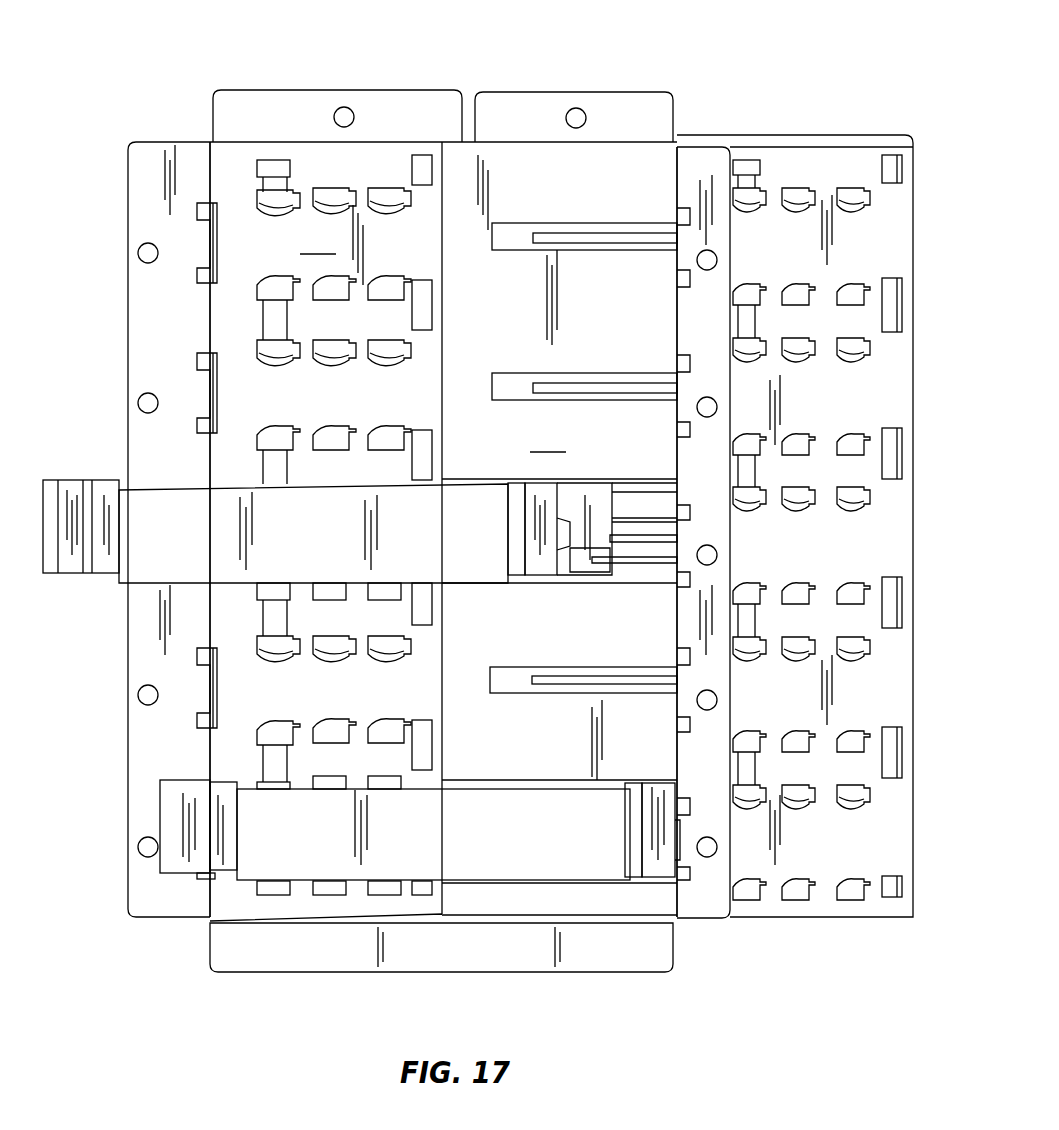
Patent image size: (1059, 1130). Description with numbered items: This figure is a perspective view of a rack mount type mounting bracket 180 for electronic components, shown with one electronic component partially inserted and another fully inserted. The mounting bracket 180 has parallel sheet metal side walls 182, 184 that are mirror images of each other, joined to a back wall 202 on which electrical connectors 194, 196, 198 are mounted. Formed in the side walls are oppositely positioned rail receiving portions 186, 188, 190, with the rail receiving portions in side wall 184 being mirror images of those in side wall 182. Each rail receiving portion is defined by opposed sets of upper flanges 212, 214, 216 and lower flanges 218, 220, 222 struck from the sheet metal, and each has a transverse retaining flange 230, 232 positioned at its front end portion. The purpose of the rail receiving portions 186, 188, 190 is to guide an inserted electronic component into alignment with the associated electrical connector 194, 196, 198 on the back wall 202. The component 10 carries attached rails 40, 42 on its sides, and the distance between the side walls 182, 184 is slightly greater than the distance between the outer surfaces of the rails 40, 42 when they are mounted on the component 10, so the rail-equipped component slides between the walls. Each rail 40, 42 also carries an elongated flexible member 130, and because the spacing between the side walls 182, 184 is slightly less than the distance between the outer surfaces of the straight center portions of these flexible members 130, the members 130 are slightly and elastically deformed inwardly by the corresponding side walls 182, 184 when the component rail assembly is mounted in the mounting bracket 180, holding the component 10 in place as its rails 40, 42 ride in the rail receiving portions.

The component 10 is at (185, 486).
The rail 40 is at (75, 573).
The rail 42 is at (518, 576).
The elongated flexible member 130 is at (662, 545).
The mounting bracket 180 is at (748, 46).
The side wall 182 is at (349, 529).
The side wall 184 is at (675, 180).
The rail receiving portion 186 is at (273, 250).
The rail receiving portion 188 is at (273, 397).
The rail receiving portion 190 is at (273, 690).
The electrical connector 194 is at (592, 223).
The electrical connector 196 is at (527, 372).
The electrical connector 198 is at (522, 694).
The back wall 202 is at (559, 532).
The upper flange 212 is at (283, 188).
The upper flange 214 is at (342, 192).
The upper flange 216 is at (386, 192).
The lower flange 218 is at (285, 278).
The lower flange 220 is at (335, 287).
The lower flange 222 is at (402, 270).
The transverse retaining flange 230 is at (205, 225).
The transverse retaining flange 232 is at (677, 268).